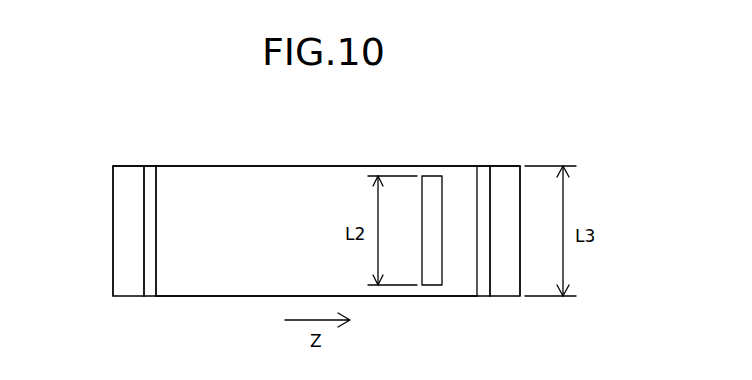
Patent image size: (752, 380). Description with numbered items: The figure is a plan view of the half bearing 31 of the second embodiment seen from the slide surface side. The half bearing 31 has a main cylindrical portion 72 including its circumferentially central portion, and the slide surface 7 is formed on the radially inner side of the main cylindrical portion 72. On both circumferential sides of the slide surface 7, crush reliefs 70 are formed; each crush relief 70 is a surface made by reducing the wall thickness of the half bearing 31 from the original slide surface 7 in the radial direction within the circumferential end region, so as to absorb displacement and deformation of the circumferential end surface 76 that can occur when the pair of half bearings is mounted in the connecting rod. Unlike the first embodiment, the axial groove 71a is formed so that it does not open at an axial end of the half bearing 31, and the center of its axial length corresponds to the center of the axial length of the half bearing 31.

The slide surface 7 is at (268, 183).
The half bearing 31 is at (327, 165).
The crush relief 70 is at (152, 190).
The axial groove 71a is at (432, 187).
The main cylindrical portion 72 is at (237, 185).
The circumferential end surface 76 is at (130, 212).